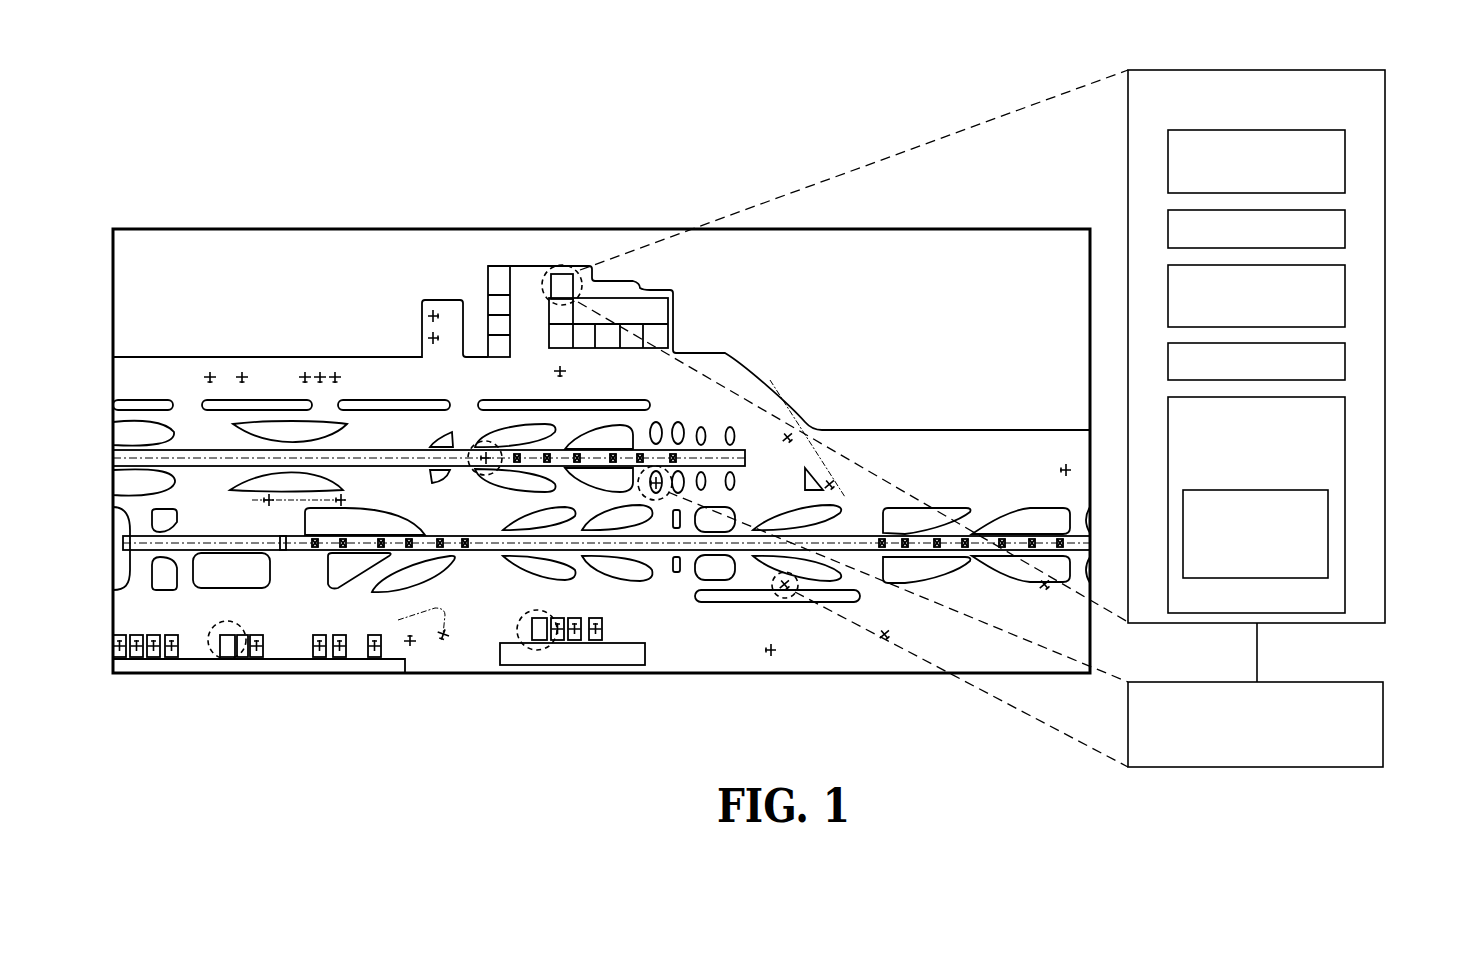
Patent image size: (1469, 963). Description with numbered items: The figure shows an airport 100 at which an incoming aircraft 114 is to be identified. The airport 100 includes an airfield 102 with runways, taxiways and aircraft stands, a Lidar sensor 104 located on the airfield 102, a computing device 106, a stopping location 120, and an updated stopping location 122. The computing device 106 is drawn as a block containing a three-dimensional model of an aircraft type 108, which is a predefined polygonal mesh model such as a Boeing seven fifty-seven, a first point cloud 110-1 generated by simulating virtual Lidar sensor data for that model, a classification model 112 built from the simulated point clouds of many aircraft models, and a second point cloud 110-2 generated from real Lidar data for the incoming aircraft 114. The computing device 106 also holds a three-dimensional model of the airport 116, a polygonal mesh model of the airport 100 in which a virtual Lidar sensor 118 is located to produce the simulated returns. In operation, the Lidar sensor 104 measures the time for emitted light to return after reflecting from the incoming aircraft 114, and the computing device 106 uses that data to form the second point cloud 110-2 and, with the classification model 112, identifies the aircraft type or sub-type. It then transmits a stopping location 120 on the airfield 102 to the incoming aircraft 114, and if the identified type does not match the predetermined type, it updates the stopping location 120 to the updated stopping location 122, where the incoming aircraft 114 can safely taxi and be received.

The airport 100 is at (181, 186).
The airfield 102 is at (252, 220).
The Lidar sensor 104 is at (657, 500).
The computing device 106 is at (562, 265).
The 3D model of aircraft type 108 is at (1345, 160).
The first point cloud 110-1 is at (1345, 228).
The second point cloud 110-2 is at (1345, 363).
The classification model 112 is at (1345, 292).
The incoming aircraft 114 is at (485, 478).
The 3D model of airport 116 is at (1345, 452).
The virtual Lidar sensor 118 is at (1328, 540).
The stopping location 120 is at (540, 658).
The updated stopping location 122 is at (230, 670).